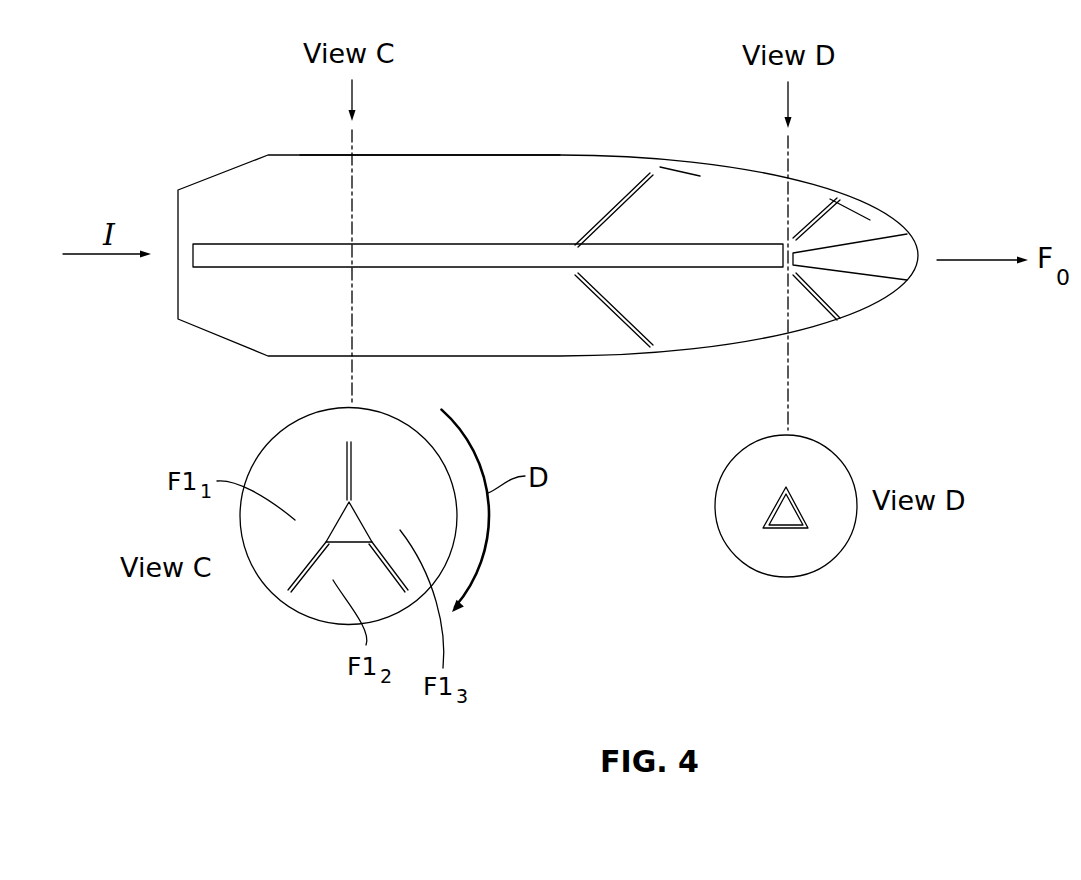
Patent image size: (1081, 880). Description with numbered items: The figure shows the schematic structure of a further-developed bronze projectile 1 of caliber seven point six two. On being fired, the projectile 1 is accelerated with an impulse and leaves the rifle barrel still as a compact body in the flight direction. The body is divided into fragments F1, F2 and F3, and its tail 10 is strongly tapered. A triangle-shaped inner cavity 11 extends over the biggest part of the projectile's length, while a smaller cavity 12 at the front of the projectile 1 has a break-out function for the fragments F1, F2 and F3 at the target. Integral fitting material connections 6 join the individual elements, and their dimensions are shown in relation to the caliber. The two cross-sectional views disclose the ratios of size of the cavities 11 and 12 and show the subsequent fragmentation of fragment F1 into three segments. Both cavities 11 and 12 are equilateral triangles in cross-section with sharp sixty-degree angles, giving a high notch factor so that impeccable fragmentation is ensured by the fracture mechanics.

The projectile 1 is at (958, 66).
The integral fitting material connections 6 is at (568, 234).
The tail 10 is at (223, 173).
The triangle-shaped inner cavity 11 is at (227, 255).
The smaller cavity 12 is at (907, 268).
The fragment F1 is at (855, 212).
The fragment F2 is at (689, 177).
The fragment F3 is at (419, 167).